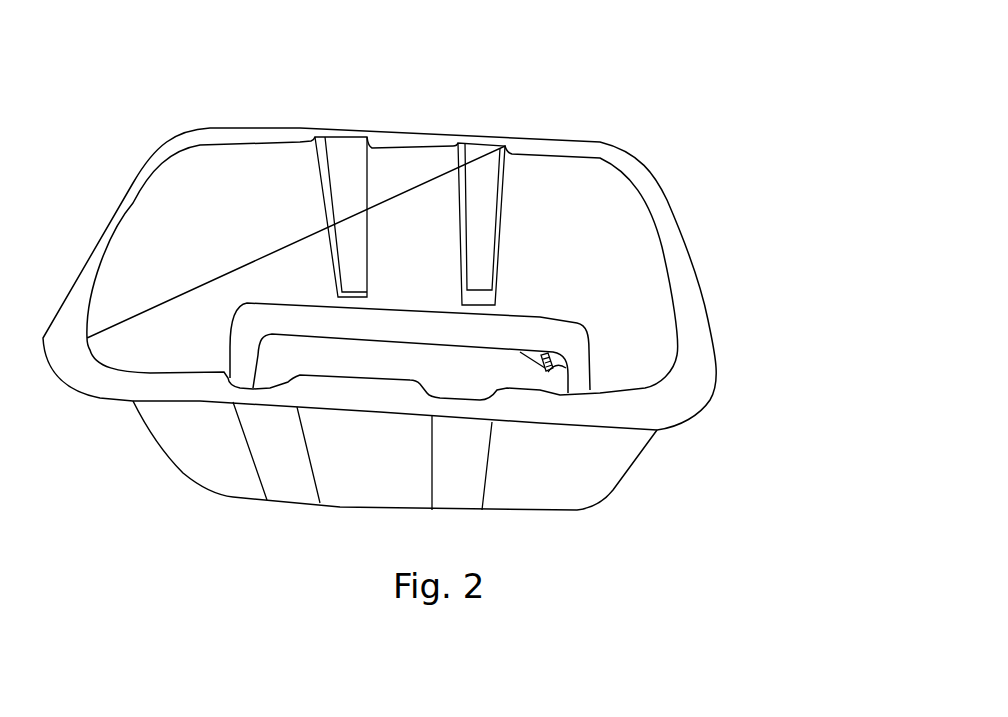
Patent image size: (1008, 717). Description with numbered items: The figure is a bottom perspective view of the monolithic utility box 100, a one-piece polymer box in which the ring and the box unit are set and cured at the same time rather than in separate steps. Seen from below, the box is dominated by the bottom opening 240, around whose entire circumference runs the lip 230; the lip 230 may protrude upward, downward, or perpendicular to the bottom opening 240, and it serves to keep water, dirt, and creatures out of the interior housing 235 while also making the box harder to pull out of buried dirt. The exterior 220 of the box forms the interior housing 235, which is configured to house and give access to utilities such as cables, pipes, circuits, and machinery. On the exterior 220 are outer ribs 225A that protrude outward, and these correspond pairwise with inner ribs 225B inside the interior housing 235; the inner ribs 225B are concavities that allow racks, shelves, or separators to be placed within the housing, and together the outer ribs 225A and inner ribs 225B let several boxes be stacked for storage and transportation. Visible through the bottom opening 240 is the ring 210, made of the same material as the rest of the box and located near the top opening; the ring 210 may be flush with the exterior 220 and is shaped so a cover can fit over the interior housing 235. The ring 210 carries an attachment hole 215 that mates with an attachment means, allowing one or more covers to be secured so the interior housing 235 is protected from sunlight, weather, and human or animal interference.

The monolithic utility box 100 is at (486, 20).
The ring 210 is at (250, 338).
The attachment hole 215 is at (553, 370).
The exterior 220 is at (595, 463).
The outer ribs 225A is at (277, 473).
The inner ribs 225B is at (330, 157).
The lip 230 is at (633, 150).
The interior housing 235 is at (650, 323).
The bottom opening 240 is at (710, 243).